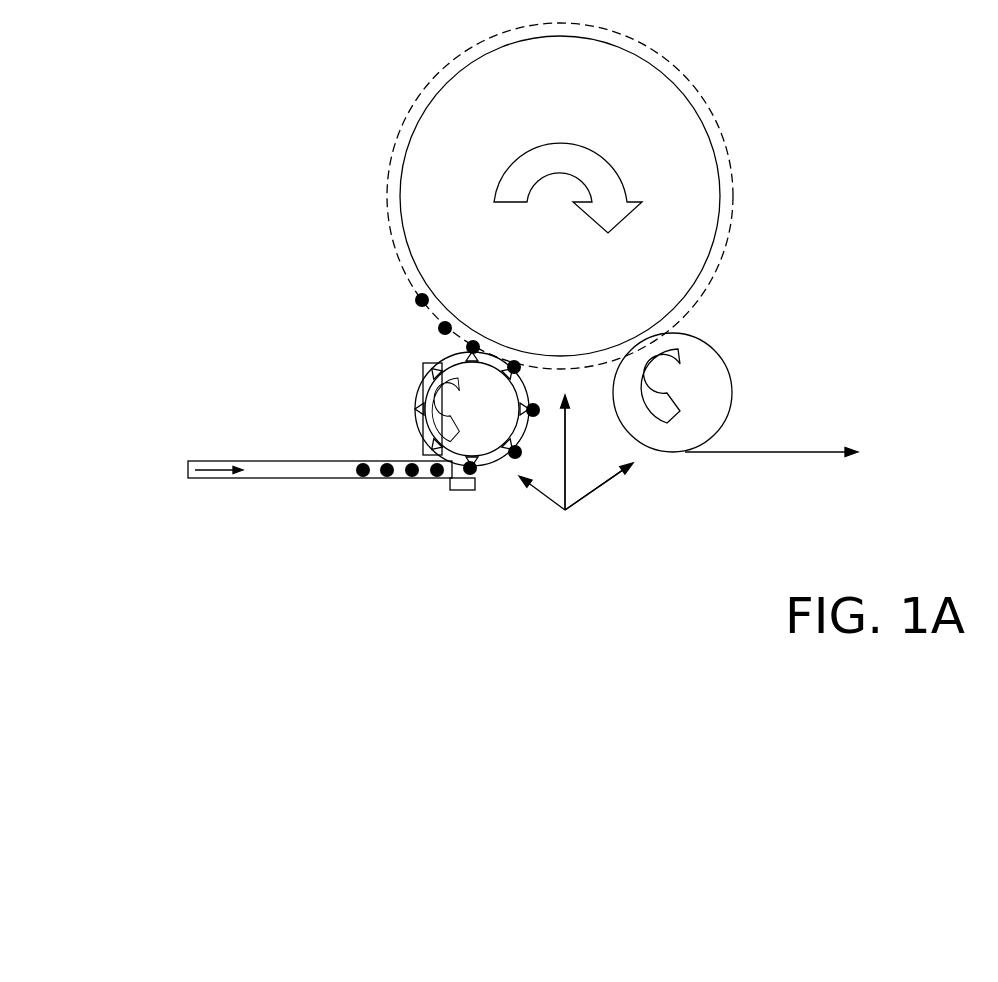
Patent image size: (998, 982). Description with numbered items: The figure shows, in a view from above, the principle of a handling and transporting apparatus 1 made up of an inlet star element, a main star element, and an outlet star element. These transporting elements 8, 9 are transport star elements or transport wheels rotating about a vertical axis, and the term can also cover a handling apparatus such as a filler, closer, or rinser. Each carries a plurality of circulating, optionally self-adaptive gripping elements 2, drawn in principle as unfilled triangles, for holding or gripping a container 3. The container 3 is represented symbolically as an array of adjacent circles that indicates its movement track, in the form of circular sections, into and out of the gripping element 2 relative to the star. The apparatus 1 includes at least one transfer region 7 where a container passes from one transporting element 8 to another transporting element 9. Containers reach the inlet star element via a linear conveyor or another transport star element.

The handling and transporting apparatus 1 is at (811, 158).
The gripping elements 2 is at (422, 440).
The container 3 is at (416, 297).
The transfer region 7 is at (517, 325).
The transporting element 8 is at (576, 471).
The transporting element 9 is at (583, 478).